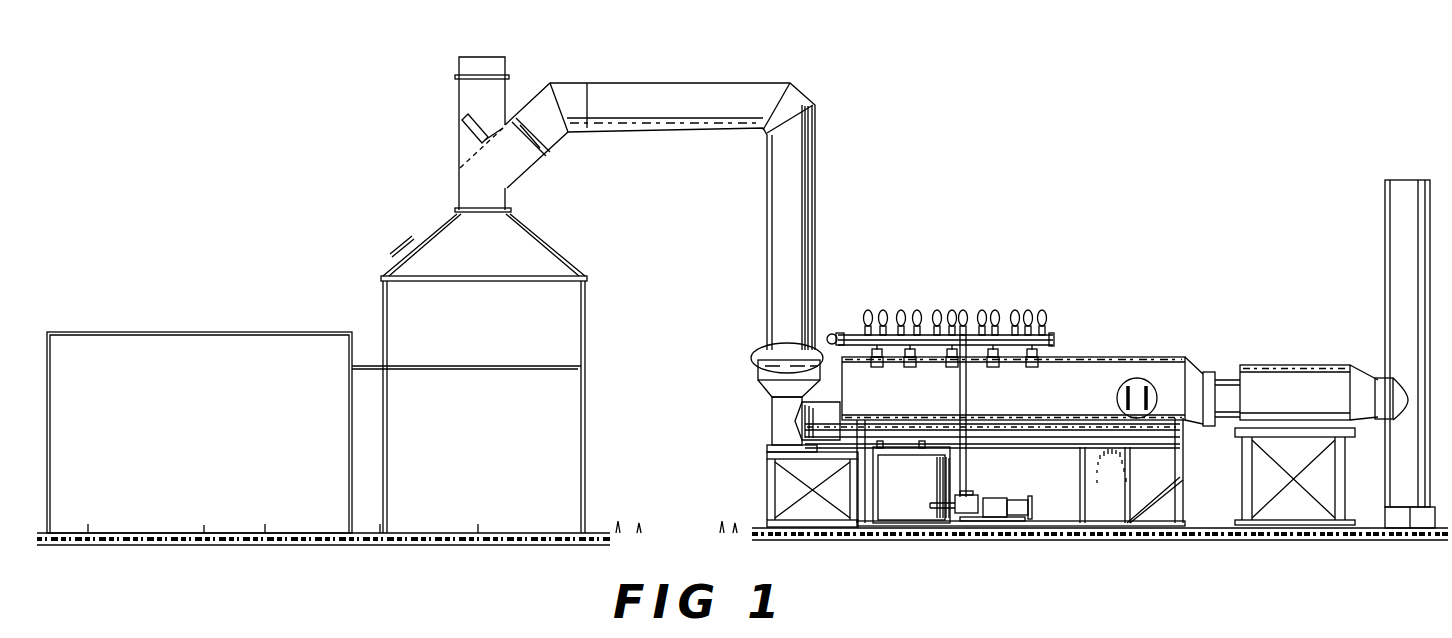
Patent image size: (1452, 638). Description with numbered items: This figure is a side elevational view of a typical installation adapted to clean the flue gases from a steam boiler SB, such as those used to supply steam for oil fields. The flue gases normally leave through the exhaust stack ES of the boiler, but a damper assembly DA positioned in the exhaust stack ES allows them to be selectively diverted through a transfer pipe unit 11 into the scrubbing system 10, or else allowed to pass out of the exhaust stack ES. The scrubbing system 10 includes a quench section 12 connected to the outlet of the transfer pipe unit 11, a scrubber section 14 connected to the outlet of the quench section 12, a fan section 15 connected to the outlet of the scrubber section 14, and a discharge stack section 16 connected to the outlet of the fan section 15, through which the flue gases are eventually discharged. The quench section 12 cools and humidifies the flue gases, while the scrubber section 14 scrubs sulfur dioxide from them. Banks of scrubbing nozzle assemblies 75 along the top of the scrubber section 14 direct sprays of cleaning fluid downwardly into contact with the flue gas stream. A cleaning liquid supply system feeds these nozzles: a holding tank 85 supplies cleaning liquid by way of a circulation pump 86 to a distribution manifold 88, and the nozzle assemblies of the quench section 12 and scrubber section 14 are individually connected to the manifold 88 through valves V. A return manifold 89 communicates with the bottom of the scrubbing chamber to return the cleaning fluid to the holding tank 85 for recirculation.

The steam boiler SB is at (358, 303).
The exhaust stack ES is at (470, 89).
The damper assembly DA is at (470, 142).
The transfer pipe unit 11 is at (813, 228).
The quench section 12 is at (770, 417).
The scrubbing system 10 is at (1022, 393).
The scrubber section 14 is at (1113, 358).
The valves V is at (834, 337).
The distribution manifold 88 is at (1054, 340).
The scrubbing nozzle assemblies 75 is at (946, 366).
The return manifold 89 is at (1027, 447).
The circulation pump 86 is at (1014, 486).
The holding tank 85 is at (913, 495).
The fan section 15 is at (1297, 364).
The discharge stack section 16 is at (1388, 285).